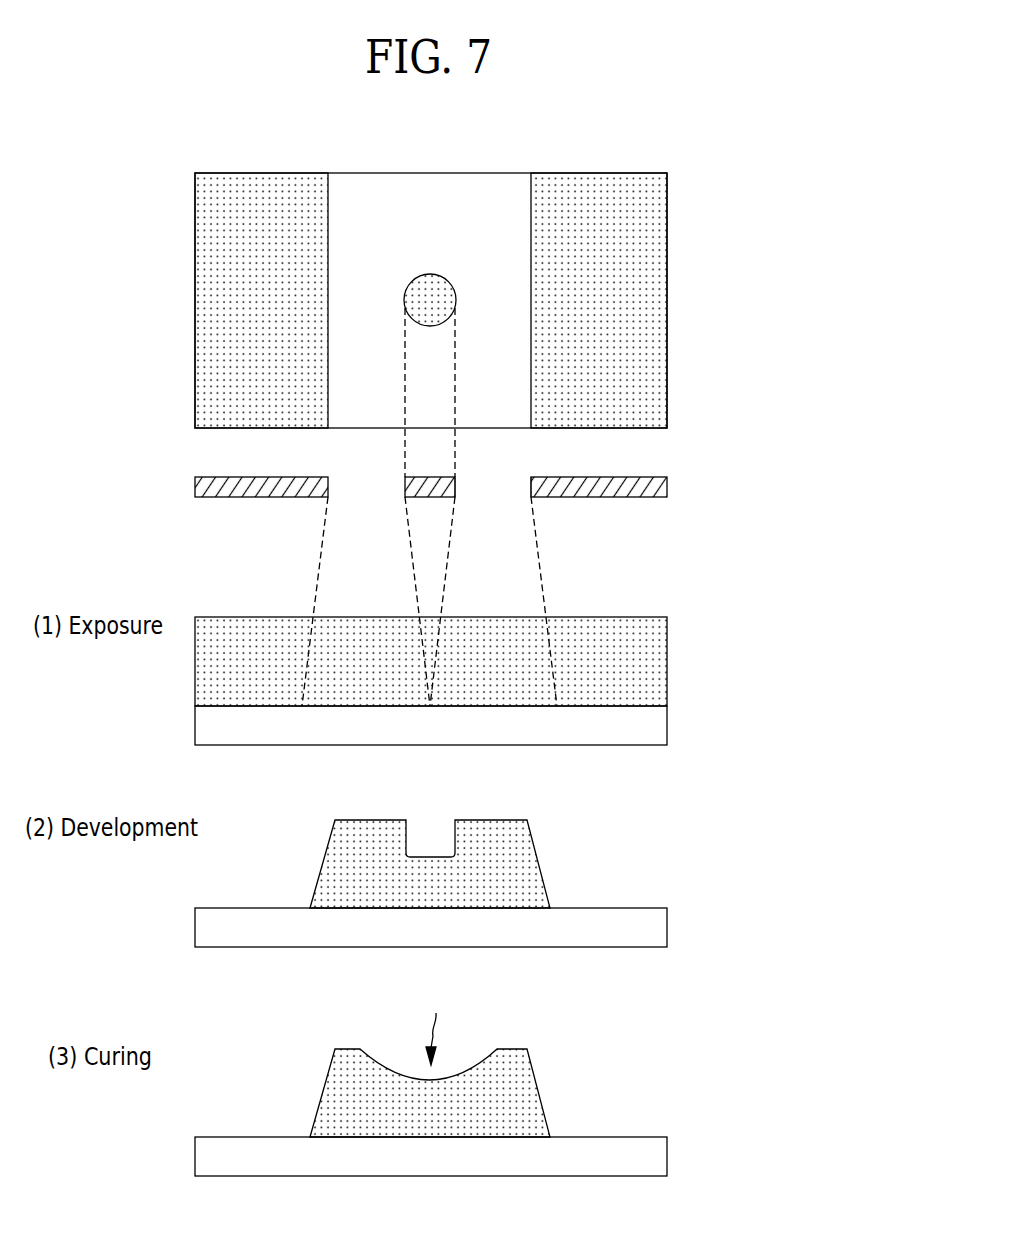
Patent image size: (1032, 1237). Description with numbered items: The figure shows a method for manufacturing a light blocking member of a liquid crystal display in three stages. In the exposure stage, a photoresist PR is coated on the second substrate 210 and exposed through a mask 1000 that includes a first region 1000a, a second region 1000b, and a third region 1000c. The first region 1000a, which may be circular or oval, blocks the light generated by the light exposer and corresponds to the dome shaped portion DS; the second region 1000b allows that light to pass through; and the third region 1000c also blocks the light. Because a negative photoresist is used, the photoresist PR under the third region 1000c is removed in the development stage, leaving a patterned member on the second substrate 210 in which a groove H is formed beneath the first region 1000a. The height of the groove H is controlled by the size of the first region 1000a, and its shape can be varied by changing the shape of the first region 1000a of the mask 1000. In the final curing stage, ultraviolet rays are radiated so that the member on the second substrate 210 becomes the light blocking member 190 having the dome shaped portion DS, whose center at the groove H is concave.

The mask 1000 is at (508, 337).
The first region 1000a is at (430, 487).
The second region 1000b is at (497, 485).
The third region 1000c is at (648, 487).
The photoresist PR is at (650, 660).
The second substrate 210 is at (650, 722).
The groove H is at (429, 841).
The lens layer / cured photoresist pattern 190 is at (523, 1093).
The dome shaped portion DS is at (435, 1024).